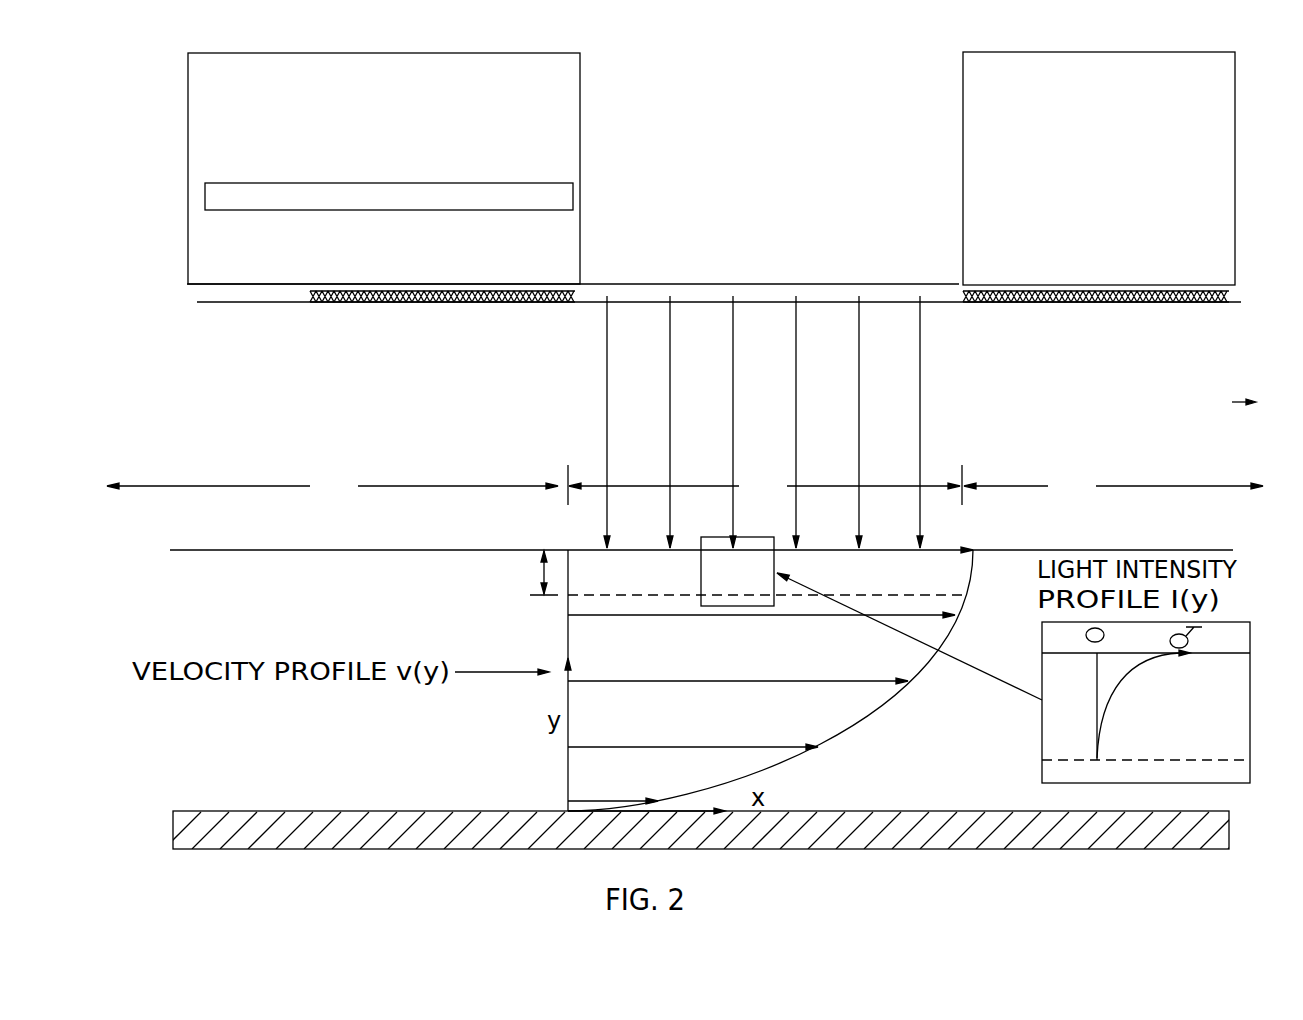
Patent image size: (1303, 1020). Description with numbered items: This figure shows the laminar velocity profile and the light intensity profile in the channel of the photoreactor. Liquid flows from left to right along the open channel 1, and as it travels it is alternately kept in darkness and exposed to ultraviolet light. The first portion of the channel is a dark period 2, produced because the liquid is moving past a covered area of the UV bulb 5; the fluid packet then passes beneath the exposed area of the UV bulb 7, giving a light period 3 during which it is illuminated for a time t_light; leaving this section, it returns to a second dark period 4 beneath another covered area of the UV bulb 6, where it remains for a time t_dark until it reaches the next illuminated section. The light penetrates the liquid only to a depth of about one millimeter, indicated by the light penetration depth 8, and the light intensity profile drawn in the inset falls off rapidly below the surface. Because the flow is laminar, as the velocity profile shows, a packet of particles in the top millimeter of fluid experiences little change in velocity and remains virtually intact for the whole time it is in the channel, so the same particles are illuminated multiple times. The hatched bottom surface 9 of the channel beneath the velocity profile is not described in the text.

The open channel 1 is at (259, 312).
The dark period 2 is at (337, 485).
The light period 3 is at (765, 485).
The dark period 4 is at (1113, 486).
The covered area of the UV bulb 5 is at (187, 116).
The covered area of the UV bulb 6 is at (1235, 174).
The exposed area of the UV bulb 7 is at (757, 238).
The light penetration depth 8 is at (534, 573).
The catalyst-coated surface 9 is at (700, 814).